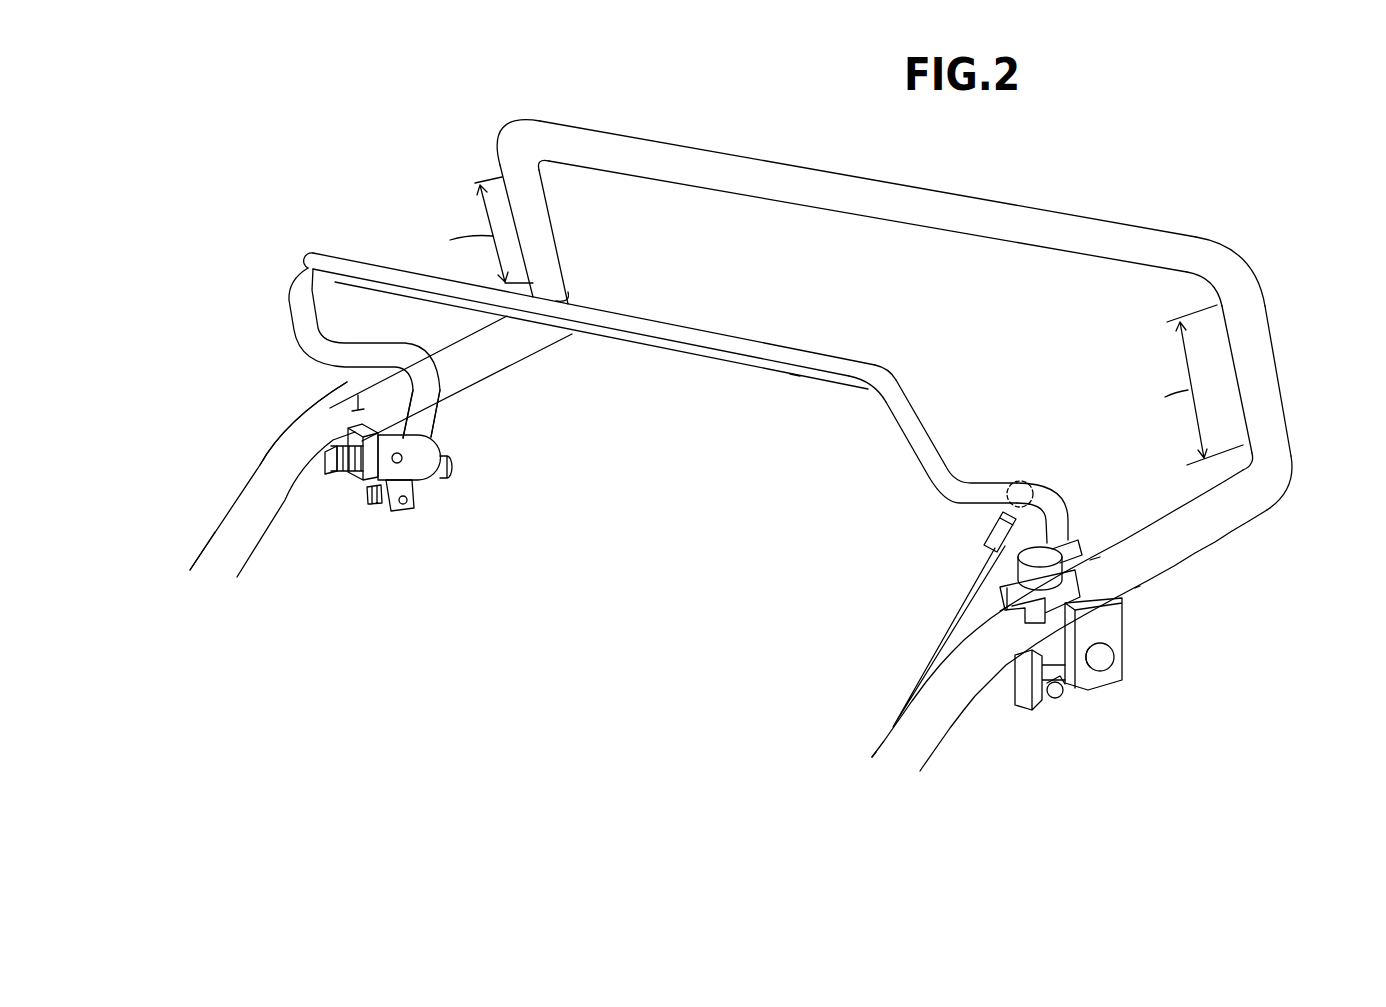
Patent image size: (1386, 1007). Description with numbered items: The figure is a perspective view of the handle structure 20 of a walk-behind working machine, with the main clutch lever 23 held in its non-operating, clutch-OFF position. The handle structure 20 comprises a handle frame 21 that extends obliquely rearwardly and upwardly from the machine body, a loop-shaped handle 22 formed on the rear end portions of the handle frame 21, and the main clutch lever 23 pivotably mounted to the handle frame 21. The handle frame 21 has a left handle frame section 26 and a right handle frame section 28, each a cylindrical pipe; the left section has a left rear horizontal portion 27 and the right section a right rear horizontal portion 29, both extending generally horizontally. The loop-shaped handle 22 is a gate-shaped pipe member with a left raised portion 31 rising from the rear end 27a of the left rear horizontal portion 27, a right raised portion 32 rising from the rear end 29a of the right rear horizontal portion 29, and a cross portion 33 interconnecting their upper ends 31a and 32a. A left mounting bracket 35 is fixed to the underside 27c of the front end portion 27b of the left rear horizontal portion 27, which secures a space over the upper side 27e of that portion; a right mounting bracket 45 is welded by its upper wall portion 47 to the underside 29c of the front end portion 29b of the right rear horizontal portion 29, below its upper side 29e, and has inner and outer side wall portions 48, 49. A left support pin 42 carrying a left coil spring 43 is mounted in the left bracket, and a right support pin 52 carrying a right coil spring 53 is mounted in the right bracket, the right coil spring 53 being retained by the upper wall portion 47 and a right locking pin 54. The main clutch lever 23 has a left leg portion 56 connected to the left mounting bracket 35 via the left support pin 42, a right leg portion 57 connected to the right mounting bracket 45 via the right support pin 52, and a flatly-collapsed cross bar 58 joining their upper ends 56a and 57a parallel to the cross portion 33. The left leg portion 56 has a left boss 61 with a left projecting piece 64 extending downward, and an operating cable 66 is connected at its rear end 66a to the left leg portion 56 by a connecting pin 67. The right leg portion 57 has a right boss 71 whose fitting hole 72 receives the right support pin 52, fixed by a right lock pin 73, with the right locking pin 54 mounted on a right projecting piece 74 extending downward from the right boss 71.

The handle structure 20 is at (344, 106).
The handle frame 21 is at (210, 476).
The loop-shaped handle 22 is at (902, 460).
The main clutch lever 23 is at (791, 367).
The left handle frame section 26 is at (954, 737).
The left rear horizontal portion 27 is at (1053, 654).
The rear end of left rear horizontal portion 27a is at (1255, 485).
The front end portion of left rear horizontal portion 27b is at (1000, 611).
The underside of front end portion 27c is at (1135, 588).
The upper side of left rear horizontal portion 27e is at (1091, 550).
The right handle frame section 28 is at (187, 546).
The right rear horizontal portion 29 is at (640, 398).
The rear end of right rear horizontal portion 29a is at (572, 294).
The front end portion of right rear horizontal portion 29b is at (313, 420).
The underside of front end portion 29c is at (448, 387).
The upper side of right rear horizontal portion 29e is at (358, 395).
The left raised portion 31 is at (1270, 350).
The upper end of left raised portion 31a is at (1240, 272).
The right raised portion 32 is at (569, 227).
The upper end of right raised portion 32a is at (507, 158).
The cross portion 33 is at (775, 170).
The left mounting bracket 35 is at (1090, 685).
The left support pin 42 is at (1107, 655).
The left coil spring 43 is at (1063, 690).
The right mounting bracket 45 is at (315, 456).
The upper wall portion 47 is at (383, 425).
The inner side wall portion 48 is at (365, 460).
The outer side wall portion 49 is at (332, 465).
The right support pin 52 is at (438, 473).
The right coil spring 53 is at (352, 412).
The right locking pin 54 is at (420, 500).
The left leg portion 56 is at (930, 445).
The upper end of left leg portion 56a is at (905, 380).
The right leg portion 57 is at (345, 316).
The upper end of right leg portion 57a is at (302, 267).
The cross bar 58 is at (710, 340).
The left boss 61 is at (987, 603).
The left projecting piece 64 is at (1030, 705).
The operating cable 66 is at (918, 612).
The rear end of operating cable 66a is at (990, 530).
The connecting pin 67 is at (1035, 480).
The right boss 71 is at (412, 445).
The fitting hole 72 is at (452, 462).
The right lock pin 73 is at (372, 495).
The right projecting piece 74 is at (408, 510).